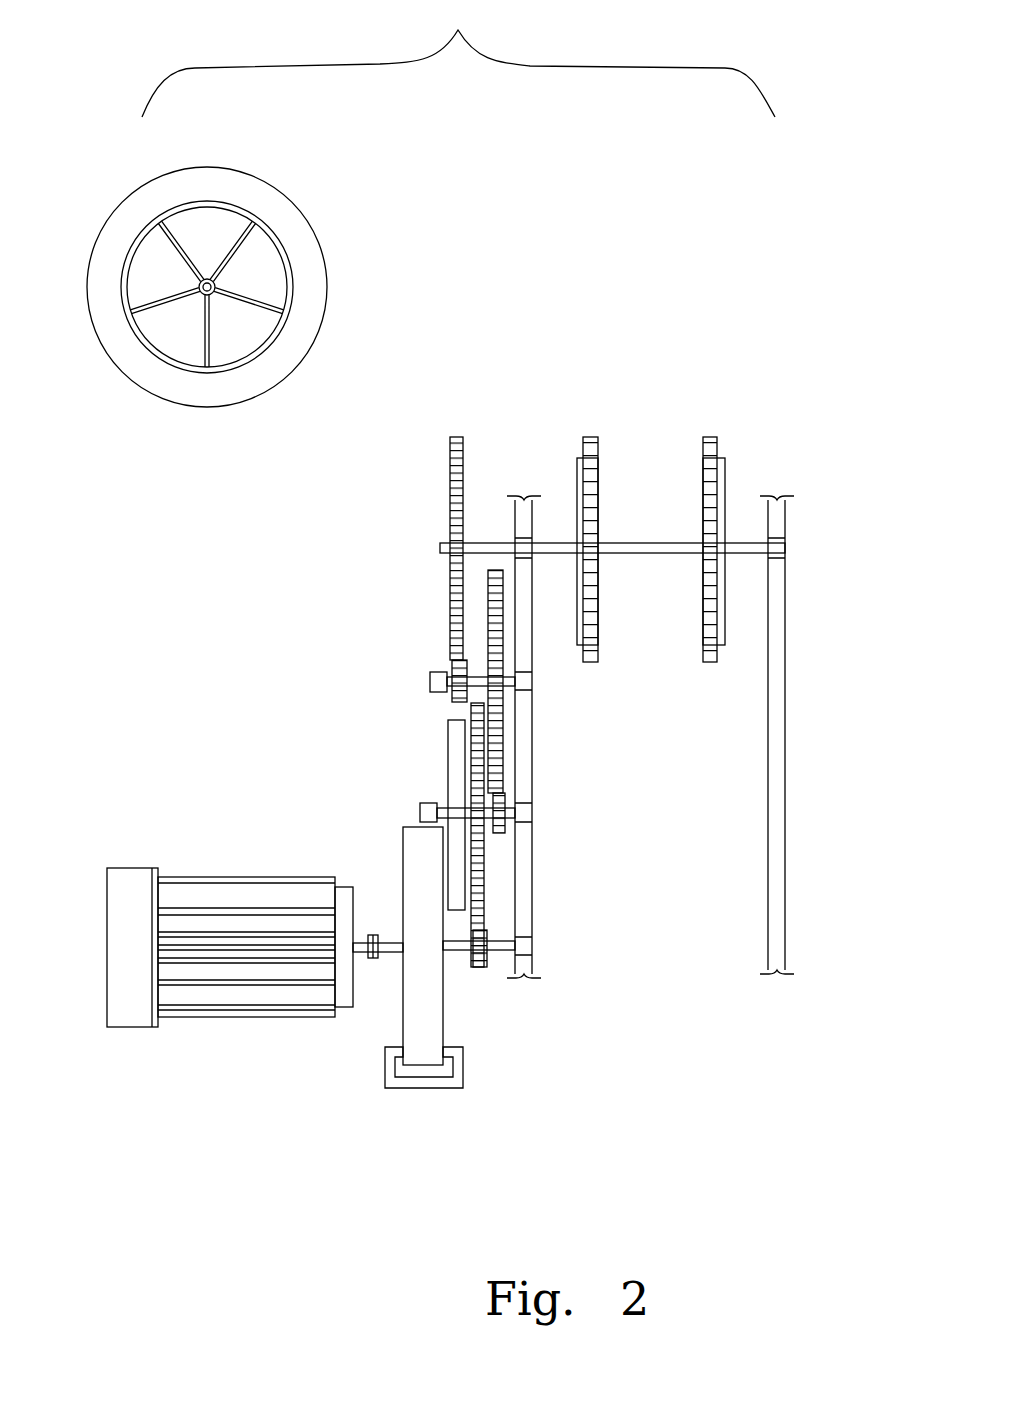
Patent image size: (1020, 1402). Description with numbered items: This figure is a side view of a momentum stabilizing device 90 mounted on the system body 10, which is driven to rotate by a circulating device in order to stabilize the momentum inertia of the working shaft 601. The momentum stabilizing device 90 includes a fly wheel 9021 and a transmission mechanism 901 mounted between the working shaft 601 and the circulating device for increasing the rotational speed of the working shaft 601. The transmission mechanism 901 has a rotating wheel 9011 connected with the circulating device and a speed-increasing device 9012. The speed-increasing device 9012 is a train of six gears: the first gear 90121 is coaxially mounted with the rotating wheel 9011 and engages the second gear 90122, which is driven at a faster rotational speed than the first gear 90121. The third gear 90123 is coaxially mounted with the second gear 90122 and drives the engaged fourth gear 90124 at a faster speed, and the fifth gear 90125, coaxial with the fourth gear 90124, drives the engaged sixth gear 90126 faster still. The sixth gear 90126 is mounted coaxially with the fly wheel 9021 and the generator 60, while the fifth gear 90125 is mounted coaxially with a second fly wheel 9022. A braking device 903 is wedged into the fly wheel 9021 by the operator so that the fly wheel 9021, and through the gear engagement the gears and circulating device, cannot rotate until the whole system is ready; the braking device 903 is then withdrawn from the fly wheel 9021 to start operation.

The momentum stabilizing device 90 is at (458, 58).
The fly wheel 9021 is at (280, 212).
The system body 10 is at (785, 598).
The rotating wheel 9011 is at (577, 475).
The transmission mechanism 901 is at (390, 514).
The first gear 90121 is at (450, 590).
The second gear 90122 is at (452, 665).
The third gear 90123 is at (450, 695).
The speed-increasing device 9012 is at (470, 738).
The second fly wheel 9022 is at (457, 775).
The fourth gear 90124 is at (503, 803).
The fifth gear 90125 is at (470, 832).
The sixth gear 90126 is at (480, 960).
The generator 60 is at (240, 1010).
The working shaft 601 is at (390, 946).
The braking device 903 is at (388, 1070).